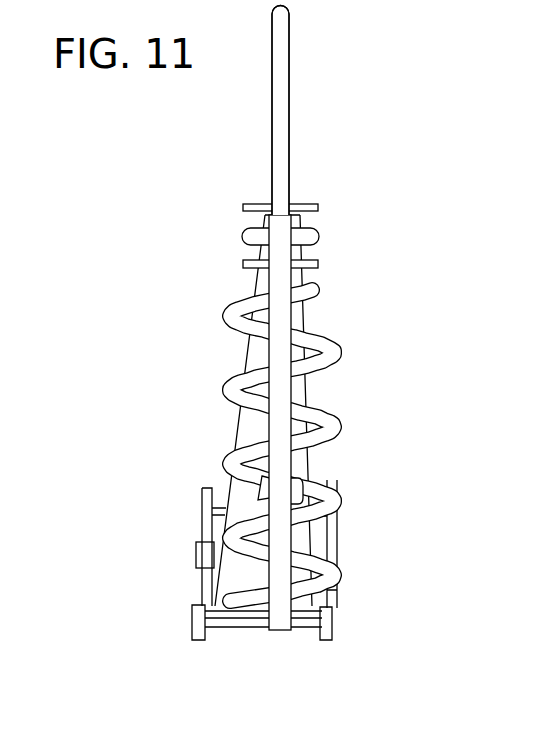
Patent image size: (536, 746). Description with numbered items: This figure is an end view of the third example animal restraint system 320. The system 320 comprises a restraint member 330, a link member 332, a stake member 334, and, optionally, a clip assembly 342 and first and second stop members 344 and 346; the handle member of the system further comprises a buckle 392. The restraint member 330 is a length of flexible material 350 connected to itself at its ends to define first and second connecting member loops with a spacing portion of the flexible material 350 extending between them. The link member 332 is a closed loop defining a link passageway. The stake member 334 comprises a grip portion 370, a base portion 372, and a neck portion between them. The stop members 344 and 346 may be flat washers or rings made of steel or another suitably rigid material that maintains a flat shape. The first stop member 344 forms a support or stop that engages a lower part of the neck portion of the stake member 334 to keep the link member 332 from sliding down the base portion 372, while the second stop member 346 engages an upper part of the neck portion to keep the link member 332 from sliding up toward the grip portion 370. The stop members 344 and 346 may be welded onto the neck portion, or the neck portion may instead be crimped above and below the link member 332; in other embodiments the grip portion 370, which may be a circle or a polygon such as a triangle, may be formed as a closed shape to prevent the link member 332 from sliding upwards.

The animal restraint system 320 is at (227, 133).
The stake member 334 is at (291, 97).
The grip portion 370 is at (283, 133).
The second stop member 346 is at (320, 208).
The link member 332 is at (320, 235).
The first stop member 344 is at (320, 264).
The base portion 372 is at (316, 341).
The flexible material 350 is at (293, 388).
The restraint member 330 is at (283, 414).
The clip assembly 342 is at (300, 478).
The buckle 392 is at (196, 550).